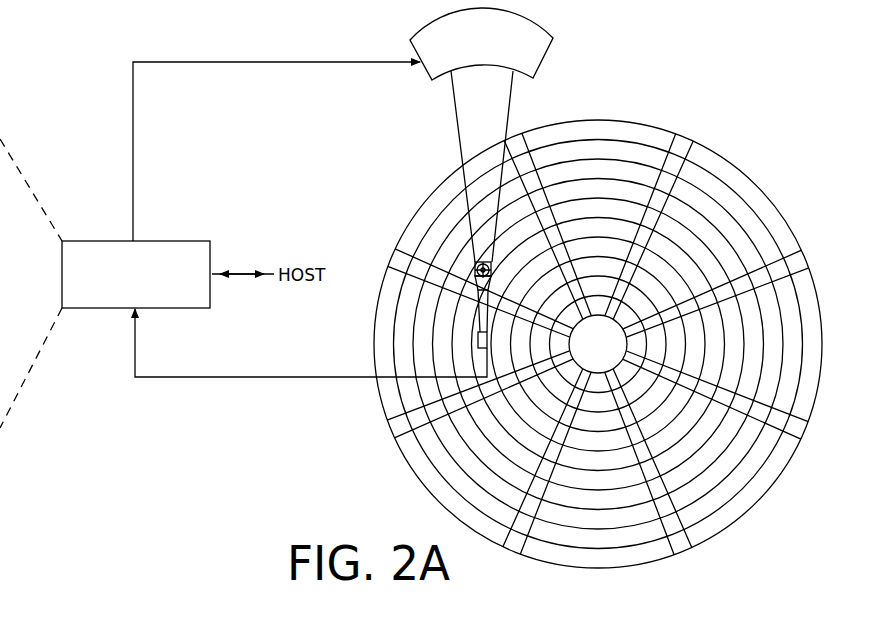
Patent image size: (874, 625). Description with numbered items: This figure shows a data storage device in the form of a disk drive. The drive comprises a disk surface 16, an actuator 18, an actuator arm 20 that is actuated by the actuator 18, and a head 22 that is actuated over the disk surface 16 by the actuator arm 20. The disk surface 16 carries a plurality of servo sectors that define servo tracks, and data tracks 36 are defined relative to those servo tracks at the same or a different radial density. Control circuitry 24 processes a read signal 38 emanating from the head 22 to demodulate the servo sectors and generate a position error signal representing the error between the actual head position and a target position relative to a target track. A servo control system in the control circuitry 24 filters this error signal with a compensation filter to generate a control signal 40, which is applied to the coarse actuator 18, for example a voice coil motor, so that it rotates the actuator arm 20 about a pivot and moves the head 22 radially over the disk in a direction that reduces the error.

The disk surface 16 is at (752, 173).
The actuator 18 is at (430, 79).
The actuator arm 20 is at (463, 151).
The head 22 is at (476, 345).
The control circuitry 24 is at (172, 241).
The data tracks 36 is at (600, 152).
The read signal 38 is at (256, 377).
The control signal 40 is at (133, 125).